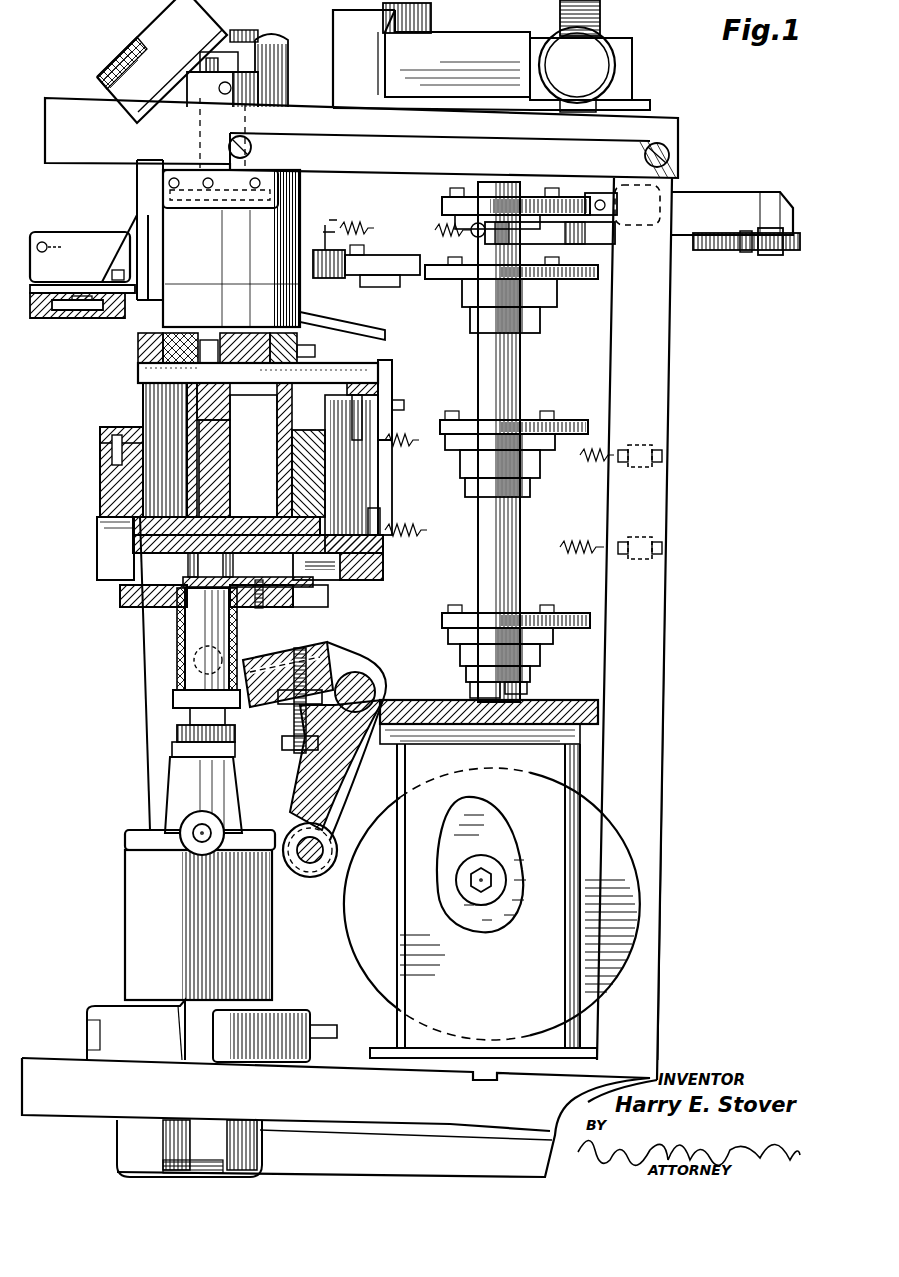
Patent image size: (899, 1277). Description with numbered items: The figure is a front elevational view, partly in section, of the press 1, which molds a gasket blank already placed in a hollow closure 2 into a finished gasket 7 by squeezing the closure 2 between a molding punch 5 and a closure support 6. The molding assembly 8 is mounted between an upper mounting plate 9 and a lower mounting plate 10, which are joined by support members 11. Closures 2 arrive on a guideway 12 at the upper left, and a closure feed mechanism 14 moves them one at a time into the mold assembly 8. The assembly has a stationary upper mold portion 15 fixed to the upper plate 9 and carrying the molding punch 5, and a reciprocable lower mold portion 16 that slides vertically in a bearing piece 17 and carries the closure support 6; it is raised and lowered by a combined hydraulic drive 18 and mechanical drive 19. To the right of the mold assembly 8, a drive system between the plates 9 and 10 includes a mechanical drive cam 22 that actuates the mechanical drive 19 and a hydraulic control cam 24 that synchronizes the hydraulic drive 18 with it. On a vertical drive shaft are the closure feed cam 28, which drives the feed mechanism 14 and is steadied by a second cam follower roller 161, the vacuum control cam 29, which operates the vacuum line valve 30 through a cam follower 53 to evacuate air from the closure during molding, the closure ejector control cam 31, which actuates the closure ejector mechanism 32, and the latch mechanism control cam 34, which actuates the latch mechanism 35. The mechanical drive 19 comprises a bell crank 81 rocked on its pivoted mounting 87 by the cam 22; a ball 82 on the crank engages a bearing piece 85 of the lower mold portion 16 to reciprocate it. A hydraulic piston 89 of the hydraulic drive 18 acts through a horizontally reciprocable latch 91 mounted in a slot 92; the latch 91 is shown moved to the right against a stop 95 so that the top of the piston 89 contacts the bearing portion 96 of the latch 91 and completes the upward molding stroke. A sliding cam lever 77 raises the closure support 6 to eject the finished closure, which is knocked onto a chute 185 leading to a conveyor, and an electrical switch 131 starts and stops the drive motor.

The press 1 is at (684, 402).
The hollow closure 2 is at (533, 15).
The molding punch 5 is at (58, 342).
The closure support 6 is at (655, 205).
The gasket 7 is at (44, 256).
The molding assembly 8 is at (128, 392).
The upper mounting plate 9 is at (64, 110).
The lower mounting plate 10 is at (618, 1080).
The support members 11 is at (150, 722).
The guideway 12 is at (76, 324).
The closure feed mechanism 14 is at (98, 236).
The stationary upper mold portion 15 is at (297, 222).
The reciprocable lower mold portion 16 is at (140, 405).
The bearing piece 17 is at (100, 572).
The hydraulic drive 18 is at (125, 893).
The mechanical drive 19 is at (350, 765).
The mechanical drive cam 22 is at (612, 835).
The hydraulic control cam 24 is at (508, 938).
The closure feed mechanism cam 28 is at (432, 270).
The vacuum control cam 29 is at (533, 200).
The vacuum line valve 30 is at (680, 168).
The closure ejector control cam 31 is at (500, 425).
The closure ejector mechanism 32 is at (388, 378).
The latch mechanism control cam 34 is at (515, 615).
The latch mechanism 35 is at (350, 535).
The cam follower 53 is at (588, 194).
The sliding cam lever 77 is at (316, 372).
The bell crank 81 is at (322, 805).
The ball 82 is at (200, 662).
The bearing piece 85 is at (180, 645).
The pivoted mounting 87 is at (372, 672).
The hydraulic piston 89 is at (200, 617).
The horizontally reciprocable latch 91 is at (192, 548).
The slot 92 is at (140, 538).
The stop 95 is at (300, 580).
The bearing portion 96 is at (226, 582).
The electrical switch 131 is at (137, 52).
The second cam follower roller 161 is at (362, 278).
The chute 185 is at (360, 330).